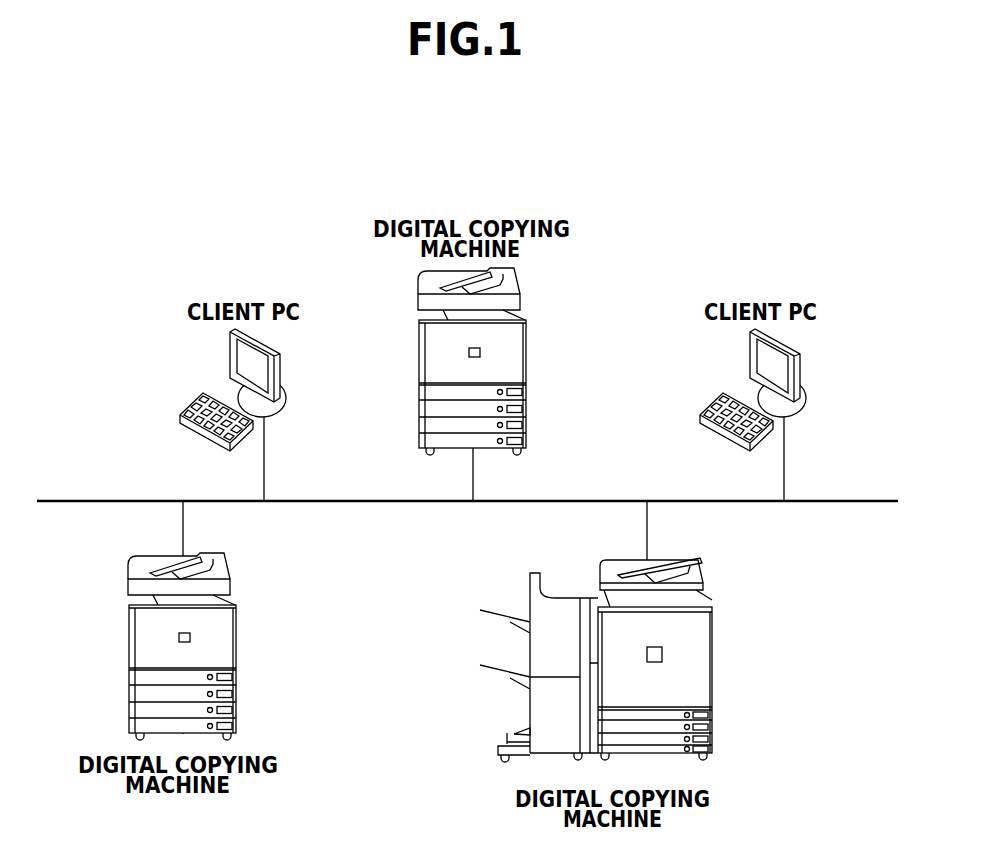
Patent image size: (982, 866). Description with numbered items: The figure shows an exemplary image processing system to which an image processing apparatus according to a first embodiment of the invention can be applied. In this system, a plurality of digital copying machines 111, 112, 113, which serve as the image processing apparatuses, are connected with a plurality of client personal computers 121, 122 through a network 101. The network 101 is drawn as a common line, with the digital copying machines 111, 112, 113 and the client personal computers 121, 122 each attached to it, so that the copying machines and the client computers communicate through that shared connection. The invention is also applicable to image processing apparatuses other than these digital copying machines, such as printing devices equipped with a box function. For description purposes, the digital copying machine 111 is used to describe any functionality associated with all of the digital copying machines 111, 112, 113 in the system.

The network 101 is at (843, 502).
The digital copying machine 111 is at (528, 357).
The digital copying machine 112 is at (223, 620).
The digital copying machine 113 is at (712, 650).
The client personal computer 121 is at (292, 390).
The client personal computer 122 is at (796, 415).